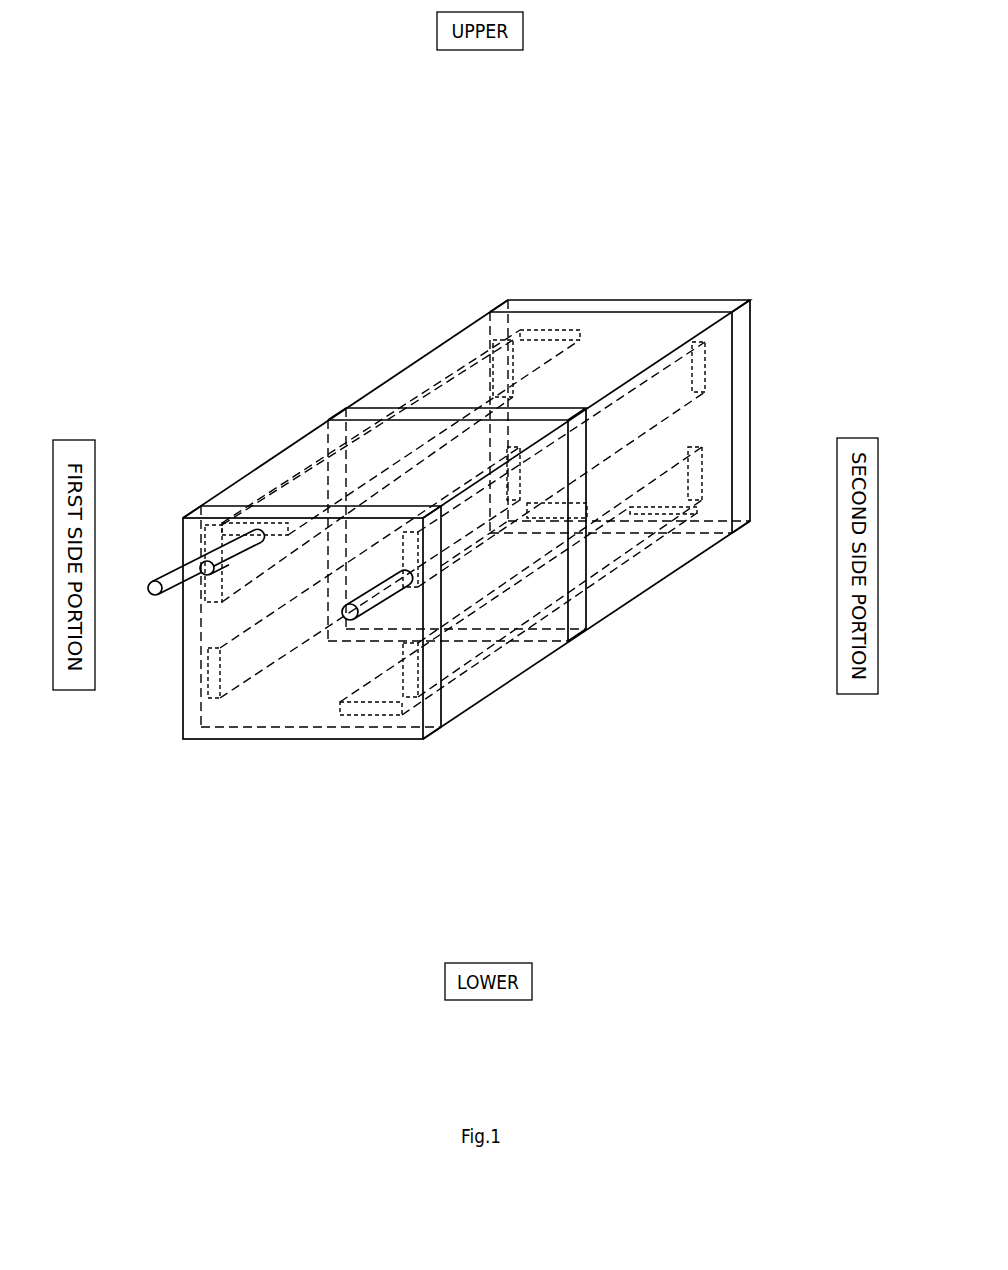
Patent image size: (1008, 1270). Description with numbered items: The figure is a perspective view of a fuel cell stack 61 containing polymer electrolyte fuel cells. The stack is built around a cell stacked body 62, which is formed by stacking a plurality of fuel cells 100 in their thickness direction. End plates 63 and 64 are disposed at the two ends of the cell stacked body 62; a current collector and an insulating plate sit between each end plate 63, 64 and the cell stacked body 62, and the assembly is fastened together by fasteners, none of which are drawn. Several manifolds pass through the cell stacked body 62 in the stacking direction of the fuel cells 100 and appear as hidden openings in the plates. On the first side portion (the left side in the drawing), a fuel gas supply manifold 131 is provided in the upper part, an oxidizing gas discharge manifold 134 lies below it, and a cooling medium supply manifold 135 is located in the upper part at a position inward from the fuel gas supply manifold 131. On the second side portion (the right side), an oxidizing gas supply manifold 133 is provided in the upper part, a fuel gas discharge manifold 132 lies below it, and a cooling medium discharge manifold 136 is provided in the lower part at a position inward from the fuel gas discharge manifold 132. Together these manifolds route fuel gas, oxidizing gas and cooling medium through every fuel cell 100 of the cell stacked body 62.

The fuel cell stack 61 is at (374, 207).
The cell stacked body 62 is at (603, 616).
The end plate 63 is at (210, 512).
The end plate 64 is at (523, 303).
The fuel cell 100 is at (360, 416).
The fuel gas supply manifold 131 is at (187, 632).
The fuel gas discharge manifold 132 is at (705, 483).
The oxidizing gas supply manifold 133 is at (705, 343).
The oxidizing gas discharge manifold 134 is at (197, 742).
The cooling medium supply manifold 135 is at (551, 326).
The cooling medium discharge manifold 136 is at (362, 729).